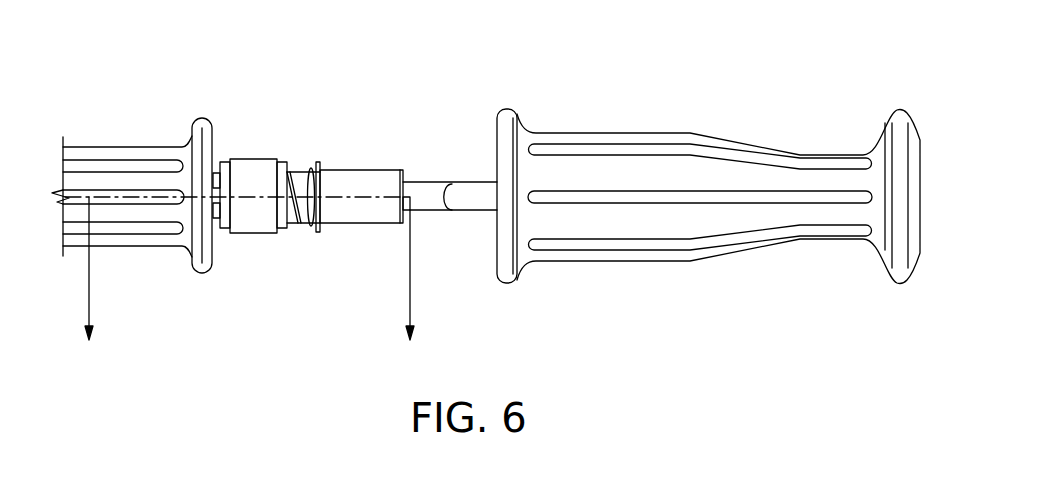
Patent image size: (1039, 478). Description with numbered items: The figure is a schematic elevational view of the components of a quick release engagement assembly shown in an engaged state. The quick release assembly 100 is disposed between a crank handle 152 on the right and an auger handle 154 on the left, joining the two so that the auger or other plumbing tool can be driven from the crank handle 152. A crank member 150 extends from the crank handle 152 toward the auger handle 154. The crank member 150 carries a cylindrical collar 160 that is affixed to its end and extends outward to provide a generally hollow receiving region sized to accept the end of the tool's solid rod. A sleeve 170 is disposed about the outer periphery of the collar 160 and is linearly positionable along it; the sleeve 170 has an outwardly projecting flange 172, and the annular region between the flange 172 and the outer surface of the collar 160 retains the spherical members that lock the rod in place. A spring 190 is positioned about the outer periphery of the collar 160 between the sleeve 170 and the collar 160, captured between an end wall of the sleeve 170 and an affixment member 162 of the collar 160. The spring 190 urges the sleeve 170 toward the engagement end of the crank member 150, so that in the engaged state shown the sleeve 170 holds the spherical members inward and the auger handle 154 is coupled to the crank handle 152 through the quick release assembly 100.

The quick release assembly 100 is at (486, 256).
The crank member 150 is at (465, 199).
The crank handle 152 is at (632, 167).
The auger handle 154 is at (105, 156).
The collar 160 is at (367, 168).
The affixment member 162 is at (318, 160).
The sleeve 170 is at (252, 234).
The outwardly projecting flange 172 is at (225, 233).
The spring 190 is at (300, 224).